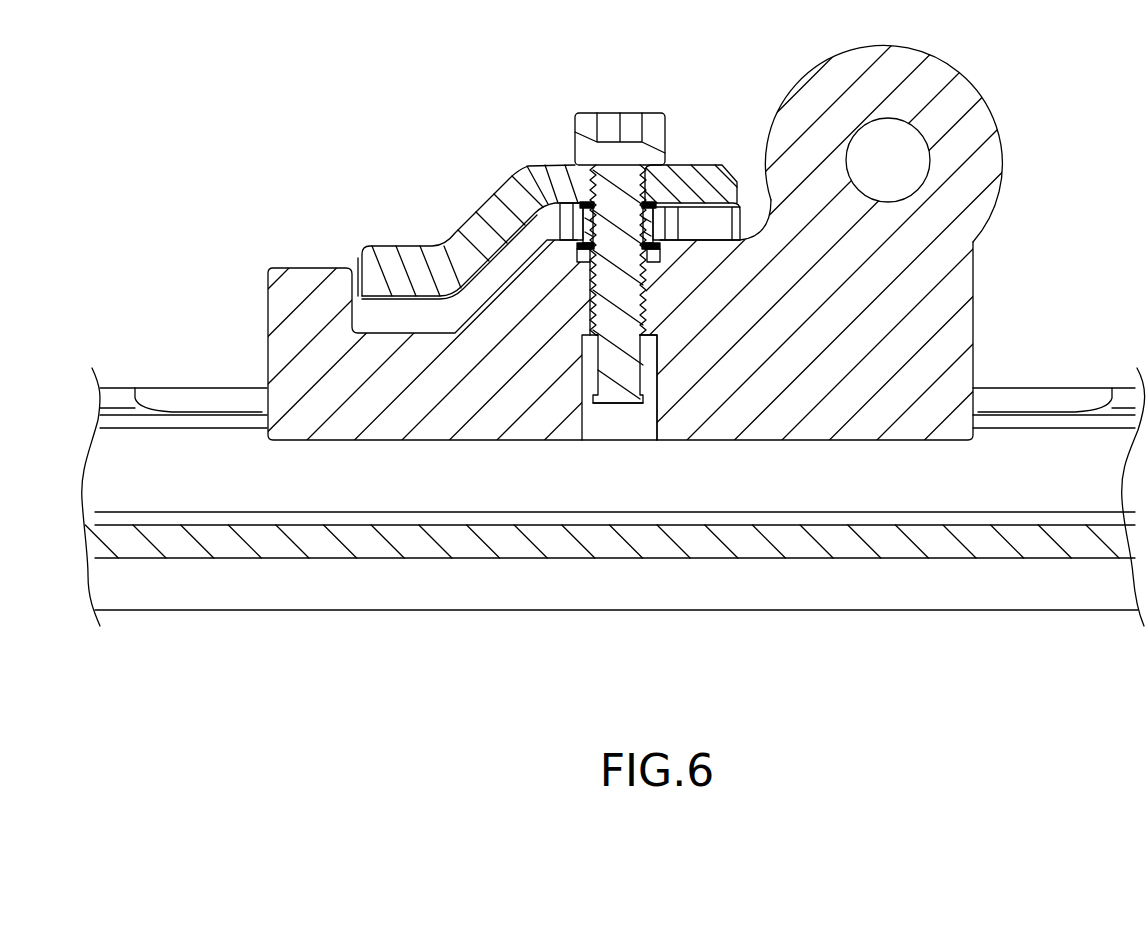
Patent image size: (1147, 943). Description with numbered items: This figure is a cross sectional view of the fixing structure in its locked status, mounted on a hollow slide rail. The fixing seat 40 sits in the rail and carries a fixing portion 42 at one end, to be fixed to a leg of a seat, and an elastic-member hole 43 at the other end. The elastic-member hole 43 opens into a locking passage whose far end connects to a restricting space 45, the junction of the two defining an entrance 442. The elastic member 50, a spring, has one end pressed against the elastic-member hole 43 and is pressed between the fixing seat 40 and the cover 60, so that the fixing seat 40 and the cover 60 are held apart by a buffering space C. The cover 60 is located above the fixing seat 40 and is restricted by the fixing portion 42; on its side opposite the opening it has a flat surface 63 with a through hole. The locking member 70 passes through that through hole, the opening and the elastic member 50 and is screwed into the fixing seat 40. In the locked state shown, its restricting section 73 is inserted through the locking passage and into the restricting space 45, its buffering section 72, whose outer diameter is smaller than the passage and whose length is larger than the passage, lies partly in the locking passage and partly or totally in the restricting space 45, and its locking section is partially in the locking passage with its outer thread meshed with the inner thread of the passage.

The fixing seat 40 is at (990, 306).
The fixing portion 42 is at (964, 86).
The elastic-member hole 43 is at (688, 241).
The restricting space 45 is at (606, 427).
The elastic member 50 is at (565, 206).
The cover 60 is at (475, 193).
The flat surface 63 is at (686, 160).
The locking member 70 is at (651, 117).
The buffering section 72 is at (645, 365).
The restricting section 73 is at (647, 404).
The entrance 442 is at (597, 336).
The buffering space C is at (419, 312).